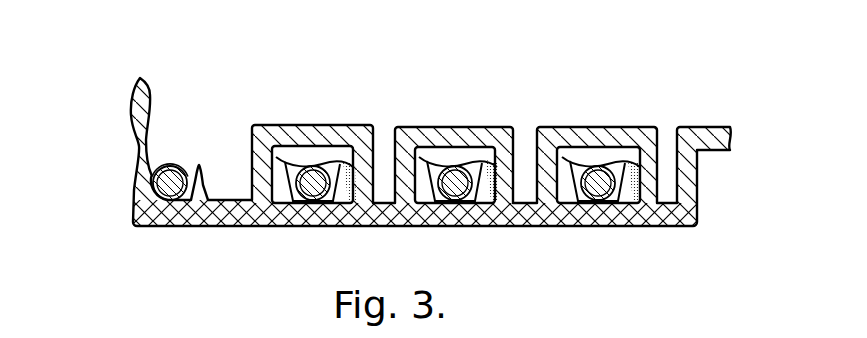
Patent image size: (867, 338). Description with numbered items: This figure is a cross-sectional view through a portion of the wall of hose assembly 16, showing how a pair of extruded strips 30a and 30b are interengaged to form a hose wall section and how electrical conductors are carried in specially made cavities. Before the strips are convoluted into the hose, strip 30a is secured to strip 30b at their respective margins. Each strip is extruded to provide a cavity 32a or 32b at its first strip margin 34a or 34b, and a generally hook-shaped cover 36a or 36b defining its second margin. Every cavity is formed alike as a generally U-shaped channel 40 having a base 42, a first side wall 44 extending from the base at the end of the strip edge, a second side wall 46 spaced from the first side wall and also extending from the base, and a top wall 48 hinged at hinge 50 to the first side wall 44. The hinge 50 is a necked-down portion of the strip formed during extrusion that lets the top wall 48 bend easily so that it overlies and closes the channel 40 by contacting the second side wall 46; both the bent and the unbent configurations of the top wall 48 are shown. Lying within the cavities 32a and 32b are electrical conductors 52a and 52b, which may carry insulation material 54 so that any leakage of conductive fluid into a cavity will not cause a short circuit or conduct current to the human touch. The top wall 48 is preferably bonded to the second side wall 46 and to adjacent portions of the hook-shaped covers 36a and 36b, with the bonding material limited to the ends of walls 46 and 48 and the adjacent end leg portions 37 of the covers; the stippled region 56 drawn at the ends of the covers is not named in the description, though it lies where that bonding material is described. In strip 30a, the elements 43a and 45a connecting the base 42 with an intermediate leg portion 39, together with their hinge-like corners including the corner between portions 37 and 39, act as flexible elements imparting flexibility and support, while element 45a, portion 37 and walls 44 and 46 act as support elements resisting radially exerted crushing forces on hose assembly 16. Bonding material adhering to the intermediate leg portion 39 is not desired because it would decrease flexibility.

The hose assembly 16 is at (412, 88).
The strip 30a is at (276, 122).
The strip 30b is at (454, 120).
The cavity 32a is at (165, 207).
The cavity 32b is at (301, 203).
The first strip margin 34a is at (133, 219).
The first strip margin 34b is at (280, 217).
The hook-shaped cover 36a is at (349, 120).
The hook-shaped cover 36b is at (418, 123).
The end leg portion 37 is at (378, 190).
The intermediate leg portion 39 is at (327, 128).
The U-shaped channel 40 is at (179, 162).
The base 42 is at (165, 216).
The flexible element 43a is at (238, 224).
The first side wall 44 is at (136, 186).
The flexible element 45a is at (260, 160).
The second side wall 46 is at (203, 168).
The top wall 48 is at (139, 80).
The hinge 50 is at (139, 149).
The electrical conductor 52a is at (195, 214).
The electrical conductor 52b is at (331, 200).
The insulation material 54 is at (168, 165).
The filler 56 is at (354, 165).